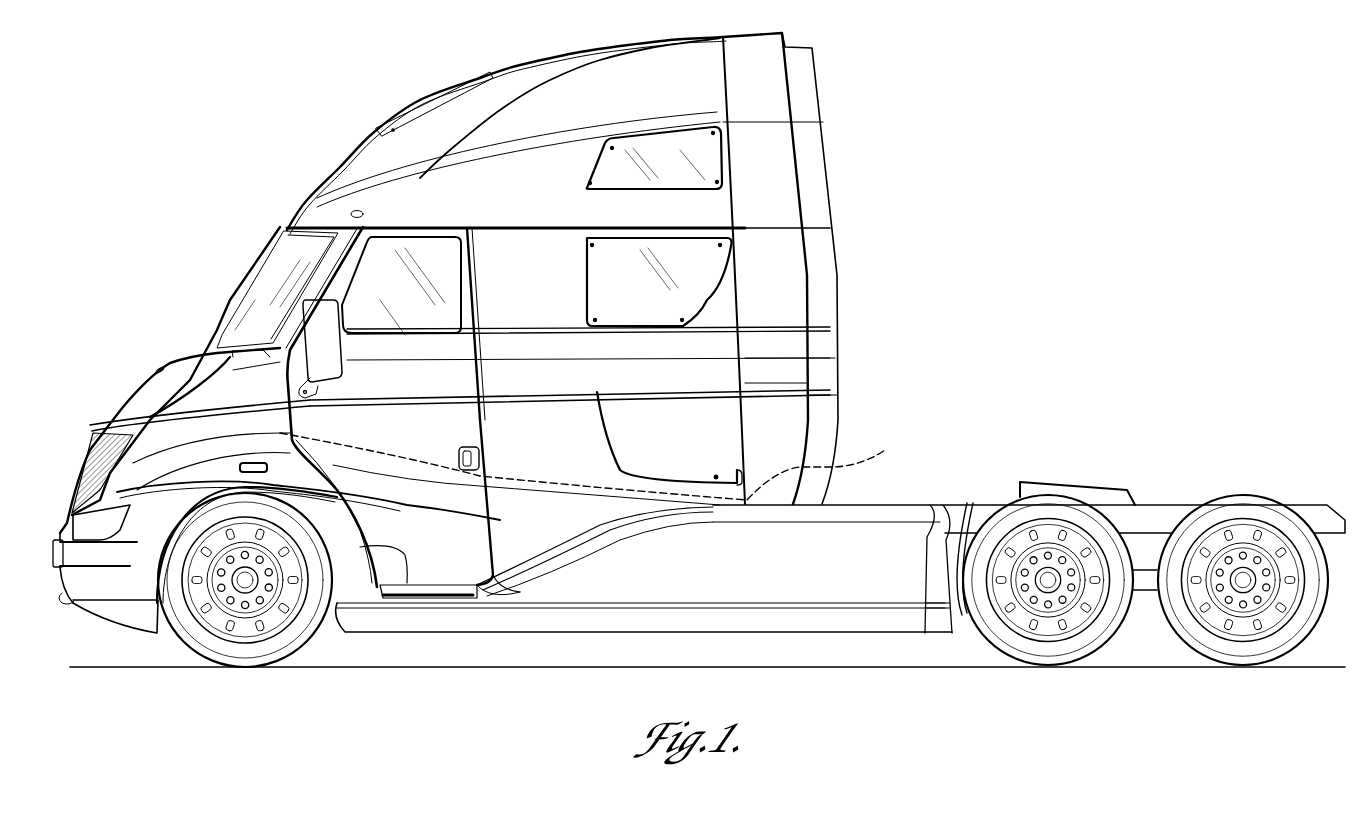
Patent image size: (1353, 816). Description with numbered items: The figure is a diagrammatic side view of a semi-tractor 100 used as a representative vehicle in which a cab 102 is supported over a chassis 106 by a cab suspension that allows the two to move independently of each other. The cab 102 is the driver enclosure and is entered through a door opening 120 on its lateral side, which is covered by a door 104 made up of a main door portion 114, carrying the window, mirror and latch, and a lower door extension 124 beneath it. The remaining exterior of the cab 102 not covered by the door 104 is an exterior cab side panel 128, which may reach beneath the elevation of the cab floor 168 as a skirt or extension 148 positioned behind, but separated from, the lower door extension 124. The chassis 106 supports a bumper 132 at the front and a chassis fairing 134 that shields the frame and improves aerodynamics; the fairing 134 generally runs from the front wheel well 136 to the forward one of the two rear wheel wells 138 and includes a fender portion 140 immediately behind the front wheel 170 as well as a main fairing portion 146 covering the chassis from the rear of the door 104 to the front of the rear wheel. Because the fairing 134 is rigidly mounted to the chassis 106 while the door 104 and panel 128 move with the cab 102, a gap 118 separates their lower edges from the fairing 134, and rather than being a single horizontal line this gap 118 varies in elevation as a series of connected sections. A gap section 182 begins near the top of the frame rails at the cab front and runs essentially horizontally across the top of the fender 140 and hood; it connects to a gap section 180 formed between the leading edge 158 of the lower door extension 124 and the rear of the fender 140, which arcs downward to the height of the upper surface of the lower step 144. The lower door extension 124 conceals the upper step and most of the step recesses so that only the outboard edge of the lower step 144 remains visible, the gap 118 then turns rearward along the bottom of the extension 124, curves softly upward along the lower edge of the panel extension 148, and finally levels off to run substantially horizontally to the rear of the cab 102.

The semi-tractor 100 is at (927, 92).
The cab 102 is at (300, 210).
The door 104 is at (230, 357).
The chassis 106 is at (1006, 477).
The main door portion 114 is at (413, 433).
The gap 118 is at (537, 560).
The door opening 120 is at (479, 249).
The lower door extension 124 is at (510, 578).
The exterior cab side panel 128 is at (735, 312).
The bumper 132 is at (118, 557).
The chassis fairing 134 is at (865, 590).
The front wheel well 136 is at (334, 633).
The rear wheel wells 138 is at (963, 503).
The fender portion 140 is at (353, 552).
The lower step 144 is at (447, 570).
The main fairing portion 146 is at (790, 568).
The extension of the exterior cab side panel 148 is at (562, 580).
The leading edge of the lower door extension 158 is at (440, 607).
The cab floor 168 is at (595, 461).
The front wheel 170 is at (210, 603).
The gap section 180 is at (390, 570).
The gap section 182 is at (322, 500).